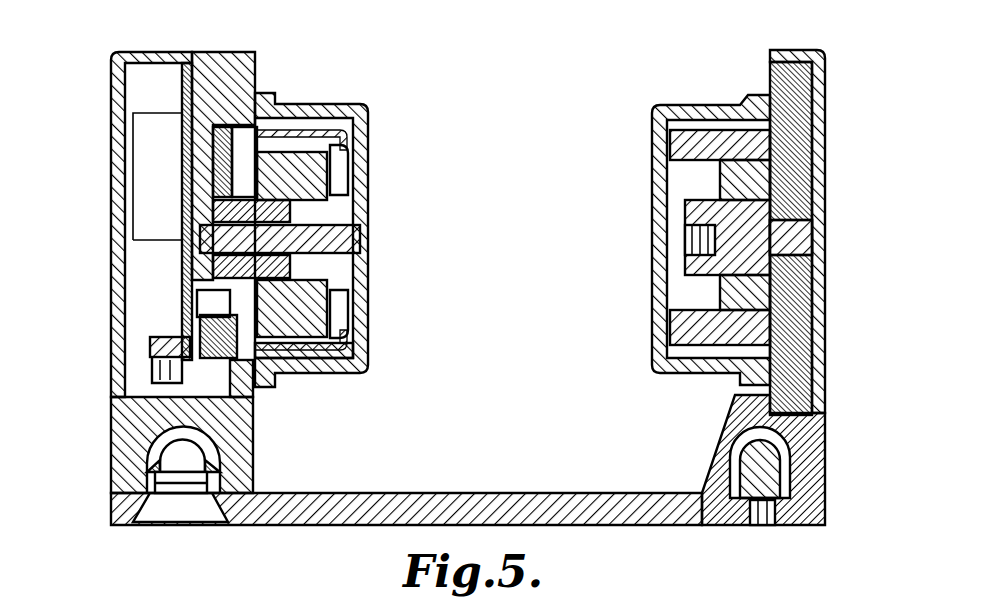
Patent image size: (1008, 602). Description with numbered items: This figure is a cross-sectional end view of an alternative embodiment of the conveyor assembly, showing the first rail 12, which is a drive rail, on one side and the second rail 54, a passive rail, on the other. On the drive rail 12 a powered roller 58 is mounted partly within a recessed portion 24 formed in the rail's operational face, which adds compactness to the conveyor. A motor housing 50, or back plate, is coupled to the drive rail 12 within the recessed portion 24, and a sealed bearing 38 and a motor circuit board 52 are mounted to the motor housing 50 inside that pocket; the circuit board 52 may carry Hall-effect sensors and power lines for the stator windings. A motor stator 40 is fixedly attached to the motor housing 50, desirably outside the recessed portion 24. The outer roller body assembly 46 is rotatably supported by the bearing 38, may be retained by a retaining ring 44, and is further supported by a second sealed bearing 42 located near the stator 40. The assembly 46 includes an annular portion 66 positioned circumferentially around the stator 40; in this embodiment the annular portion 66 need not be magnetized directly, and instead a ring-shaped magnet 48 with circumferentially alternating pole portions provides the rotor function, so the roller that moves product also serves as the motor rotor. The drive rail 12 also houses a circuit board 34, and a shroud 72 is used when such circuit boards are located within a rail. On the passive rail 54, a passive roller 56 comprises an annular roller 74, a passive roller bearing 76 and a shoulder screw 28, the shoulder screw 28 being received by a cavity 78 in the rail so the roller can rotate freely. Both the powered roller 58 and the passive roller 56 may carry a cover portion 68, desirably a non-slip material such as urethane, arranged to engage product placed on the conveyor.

The first rail 12 is at (213, 70).
The recessed portion 24 is at (197, 205).
The shoulder screw 28 is at (802, 237).
The circuit board 34 is at (185, 100).
The sealed bearing 38 is at (187, 225).
The motor stator 40 is at (330, 172).
The second sealed bearing 42 is at (317, 268).
The retaining ring 44 is at (200, 268).
The outer roller body assembly 46 is at (343, 208).
The magnet 48 is at (302, 333).
The motor housing 50 is at (214, 118).
The motor circuit board 52 is at (182, 360).
The second rail 54 is at (789, 268).
The passive roller 56 is at (719, 237).
The powered roller 58 is at (247, 228).
The annular portion 66 is at (317, 130).
The cover portion 68 is at (653, 348).
The shroud 72 is at (113, 60).
The annular roller 74 is at (763, 137).
The passive roller bearing 76 is at (757, 185).
The cavity 78 is at (817, 297).